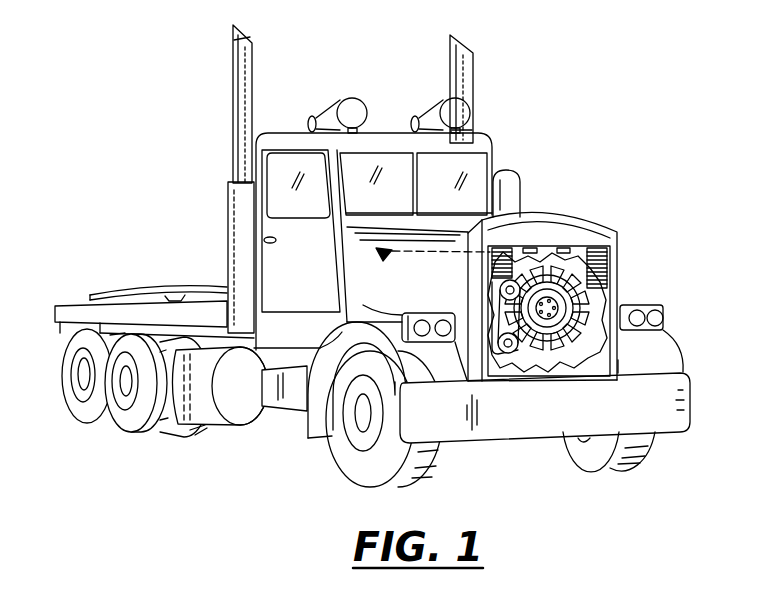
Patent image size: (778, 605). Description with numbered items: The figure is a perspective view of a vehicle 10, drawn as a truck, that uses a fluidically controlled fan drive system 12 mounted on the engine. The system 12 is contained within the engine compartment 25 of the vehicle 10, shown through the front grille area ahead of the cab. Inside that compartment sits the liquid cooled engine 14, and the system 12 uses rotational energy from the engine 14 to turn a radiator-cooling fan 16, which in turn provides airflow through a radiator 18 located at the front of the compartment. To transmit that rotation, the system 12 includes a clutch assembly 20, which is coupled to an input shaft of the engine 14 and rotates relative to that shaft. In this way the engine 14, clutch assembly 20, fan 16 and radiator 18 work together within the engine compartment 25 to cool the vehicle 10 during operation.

The vehicle 10 is at (380, 130).
The fluidically controlled fan drive system 12 is at (536, 258).
The liquid cooled engine 14 is at (418, 249).
The radiator-cooling fan 16 is at (585, 307).
The radiator 18 is at (600, 262).
The clutch assembly 20 is at (510, 334).
The engine compartment 25 is at (378, 254).